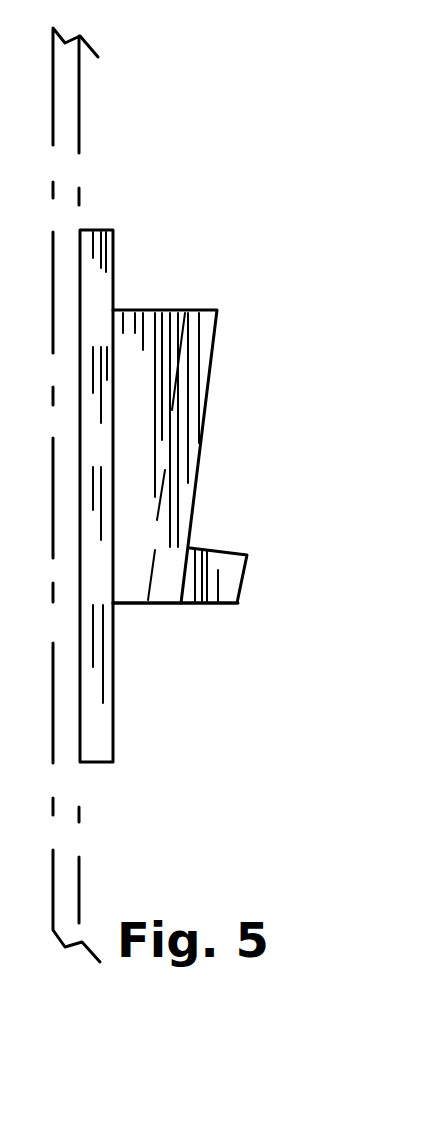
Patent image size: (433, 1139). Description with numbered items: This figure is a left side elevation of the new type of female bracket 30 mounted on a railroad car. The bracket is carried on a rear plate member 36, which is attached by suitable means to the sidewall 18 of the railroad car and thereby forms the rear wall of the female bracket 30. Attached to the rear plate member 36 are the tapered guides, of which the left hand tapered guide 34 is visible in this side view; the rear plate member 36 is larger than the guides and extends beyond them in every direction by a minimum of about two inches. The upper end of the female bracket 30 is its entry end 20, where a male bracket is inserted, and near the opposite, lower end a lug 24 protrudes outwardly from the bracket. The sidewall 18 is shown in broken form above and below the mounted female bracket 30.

The sidewall 18 is at (80, 138).
The rear plate member 36 is at (92, 230).
The entry end 20 is at (198, 310).
The female bracket 30 is at (222, 232).
The lug 24 is at (215, 550).
The left hand tapered guide 34 is at (135, 590).